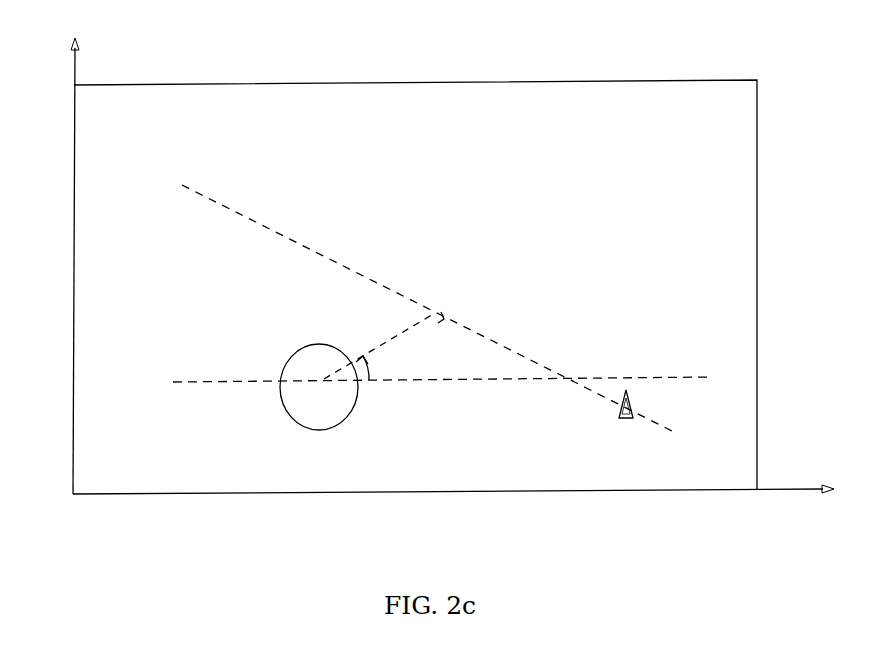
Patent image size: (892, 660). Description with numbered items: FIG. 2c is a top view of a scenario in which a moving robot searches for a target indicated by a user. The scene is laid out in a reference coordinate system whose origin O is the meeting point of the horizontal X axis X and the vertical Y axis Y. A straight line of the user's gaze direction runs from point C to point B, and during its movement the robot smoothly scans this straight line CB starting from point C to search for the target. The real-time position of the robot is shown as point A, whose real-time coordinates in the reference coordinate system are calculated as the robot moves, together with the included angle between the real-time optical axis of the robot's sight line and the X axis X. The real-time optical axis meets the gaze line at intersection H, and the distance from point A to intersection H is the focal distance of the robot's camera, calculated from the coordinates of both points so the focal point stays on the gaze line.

The origin of the reference coordinate system O is at (398, 299).
The X axis X is at (453, 504).
The Y axis Y is at (57, 266).
The point C is at (427, 300).
The intersection H is at (397, 332).
The real-time position A' A is at (319, 387).
The point B is at (612, 412).